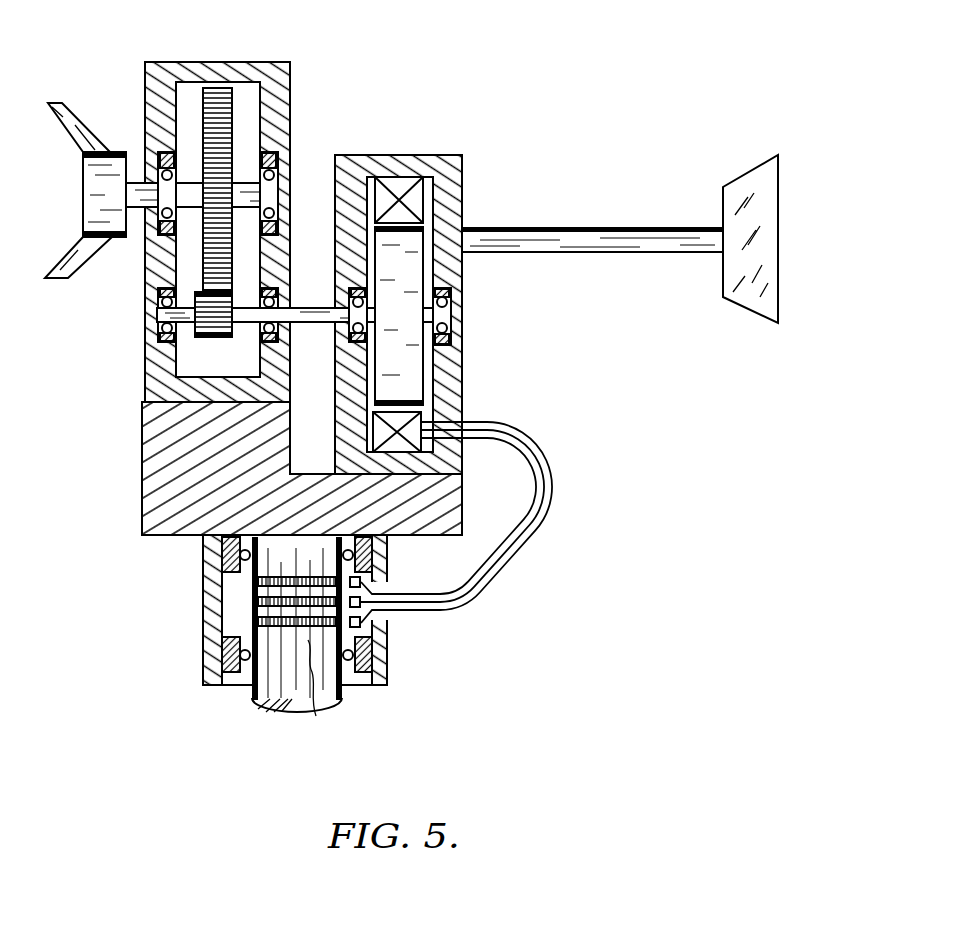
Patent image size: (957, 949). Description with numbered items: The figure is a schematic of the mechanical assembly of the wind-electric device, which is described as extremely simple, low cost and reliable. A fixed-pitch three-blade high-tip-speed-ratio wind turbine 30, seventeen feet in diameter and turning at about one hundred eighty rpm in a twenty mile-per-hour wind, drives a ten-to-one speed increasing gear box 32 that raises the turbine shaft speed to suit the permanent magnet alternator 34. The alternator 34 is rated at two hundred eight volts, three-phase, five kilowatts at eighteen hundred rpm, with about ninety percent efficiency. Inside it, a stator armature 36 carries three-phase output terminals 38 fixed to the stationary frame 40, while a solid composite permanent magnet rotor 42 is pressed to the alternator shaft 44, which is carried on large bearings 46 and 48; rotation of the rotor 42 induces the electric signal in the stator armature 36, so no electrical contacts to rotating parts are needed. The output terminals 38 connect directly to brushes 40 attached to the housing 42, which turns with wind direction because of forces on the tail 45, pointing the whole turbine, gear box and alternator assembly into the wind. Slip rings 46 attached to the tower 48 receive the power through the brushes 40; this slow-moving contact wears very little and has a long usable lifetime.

The wind turbine 30 is at (62, 102).
The speed increasing gear box 32 is at (292, 61).
The permanent magnet alternator 34 is at (355, 155).
The stator armature 36 is at (423, 200).
The three-phase output terminals 38 is at (523, 433).
The stationary frame / brushes 40 is at (461, 306).
The permanent magnet rotor / housing 42 is at (424, 250).
The alternator shaft 44 is at (452, 318).
The tail 45 is at (737, 178).
The bearing / slip rings 46 is at (348, 337).
The bearing / tower 48 is at (452, 294).